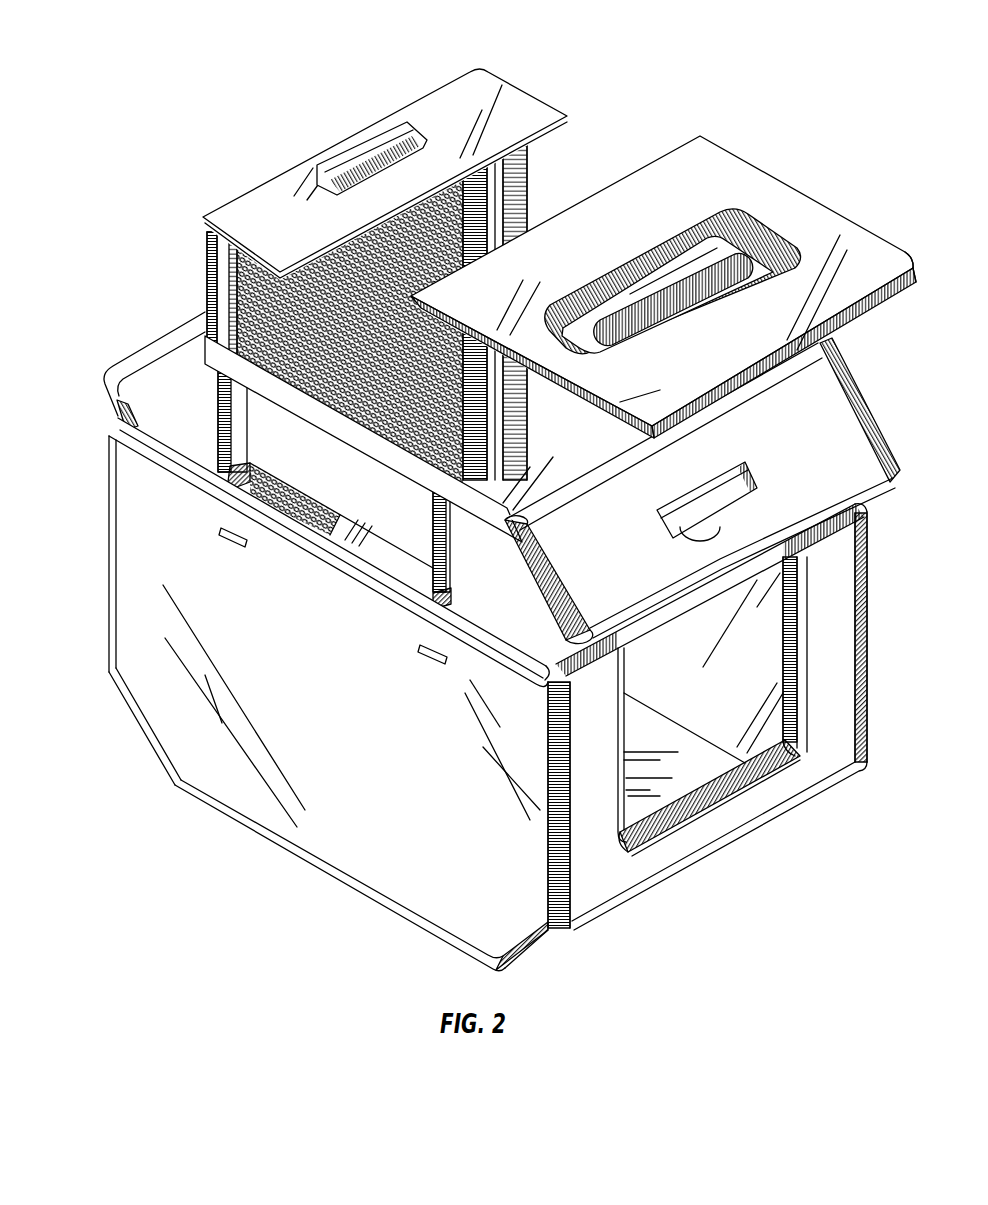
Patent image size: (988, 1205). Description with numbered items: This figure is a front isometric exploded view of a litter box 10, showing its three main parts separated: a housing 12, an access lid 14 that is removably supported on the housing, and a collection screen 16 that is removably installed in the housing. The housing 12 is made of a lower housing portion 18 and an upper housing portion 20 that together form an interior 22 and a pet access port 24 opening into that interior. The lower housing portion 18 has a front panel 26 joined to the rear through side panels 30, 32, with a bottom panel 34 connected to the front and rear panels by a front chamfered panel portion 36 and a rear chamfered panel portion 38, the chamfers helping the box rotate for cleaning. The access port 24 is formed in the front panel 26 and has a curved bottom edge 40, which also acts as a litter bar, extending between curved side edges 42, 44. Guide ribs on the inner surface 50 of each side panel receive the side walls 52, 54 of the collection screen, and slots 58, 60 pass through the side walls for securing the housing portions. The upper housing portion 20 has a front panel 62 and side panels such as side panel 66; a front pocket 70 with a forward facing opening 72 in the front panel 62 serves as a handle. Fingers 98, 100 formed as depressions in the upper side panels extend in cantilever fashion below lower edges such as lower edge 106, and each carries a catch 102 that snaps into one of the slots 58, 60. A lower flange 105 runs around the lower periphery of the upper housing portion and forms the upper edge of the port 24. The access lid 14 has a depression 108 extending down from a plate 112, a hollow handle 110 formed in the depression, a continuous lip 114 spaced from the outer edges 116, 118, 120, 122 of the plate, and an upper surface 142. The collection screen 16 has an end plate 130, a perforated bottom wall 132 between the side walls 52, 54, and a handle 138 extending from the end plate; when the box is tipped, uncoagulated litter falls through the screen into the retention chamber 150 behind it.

The litter box 10 is at (484, 501).
The housing 12 is at (481, 647).
The access lid 14 is at (671, 273).
The collection screen 16 is at (388, 158).
The lower housing portion 18 is at (315, 716).
The upper housing portion 20 is at (304, 488).
The interior 22 is at (737, 800).
The pet access port 24 is at (740, 717).
The front panel 26 is at (613, 890).
The side panel 30 is at (243, 798).
The side panel 32 is at (717, 710).
The bottom panel 34 is at (690, 838).
The front chamfered panel portion 36 is at (533, 952).
The rear chamfered panel portion 38 is at (140, 733).
The curved bottom edge 40 is at (806, 784).
The curved side edge 42 is at (866, 660).
The curved side edge 44 is at (642, 657).
The inner surface 50 is at (744, 721).
The side wall 52 is at (217, 272).
The side wall 54 is at (505, 177).
The slot 58 is at (420, 648).
The slot 60 is at (220, 532).
The front panel 62 is at (714, 491).
The side panel 66 is at (367, 528).
The front pocket 70 is at (722, 468).
The forward facing opening 72 is at (703, 540).
The finger 98 is at (232, 412).
The finger 100 is at (436, 524).
The catch 102 is at (226, 486).
The lower flange 105 is at (700, 597).
The lower edge 106 is at (864, 528).
The depression 108 is at (762, 222).
The hollow handle 110 is at (658, 312).
The plate 112 is at (780, 207).
The continuous lip 114 is at (828, 344).
The outer edge 116 is at (868, 318).
The outer edge 118 is at (585, 410).
The outer edge 120 is at (678, 158).
The outer edge 122 is at (845, 224).
The end plate 130 is at (428, 100).
The bottom wall 132 is at (260, 286).
The handle 138 is at (348, 160).
The upper surface 142 is at (654, 408).
The retention chamber 150 is at (145, 432).